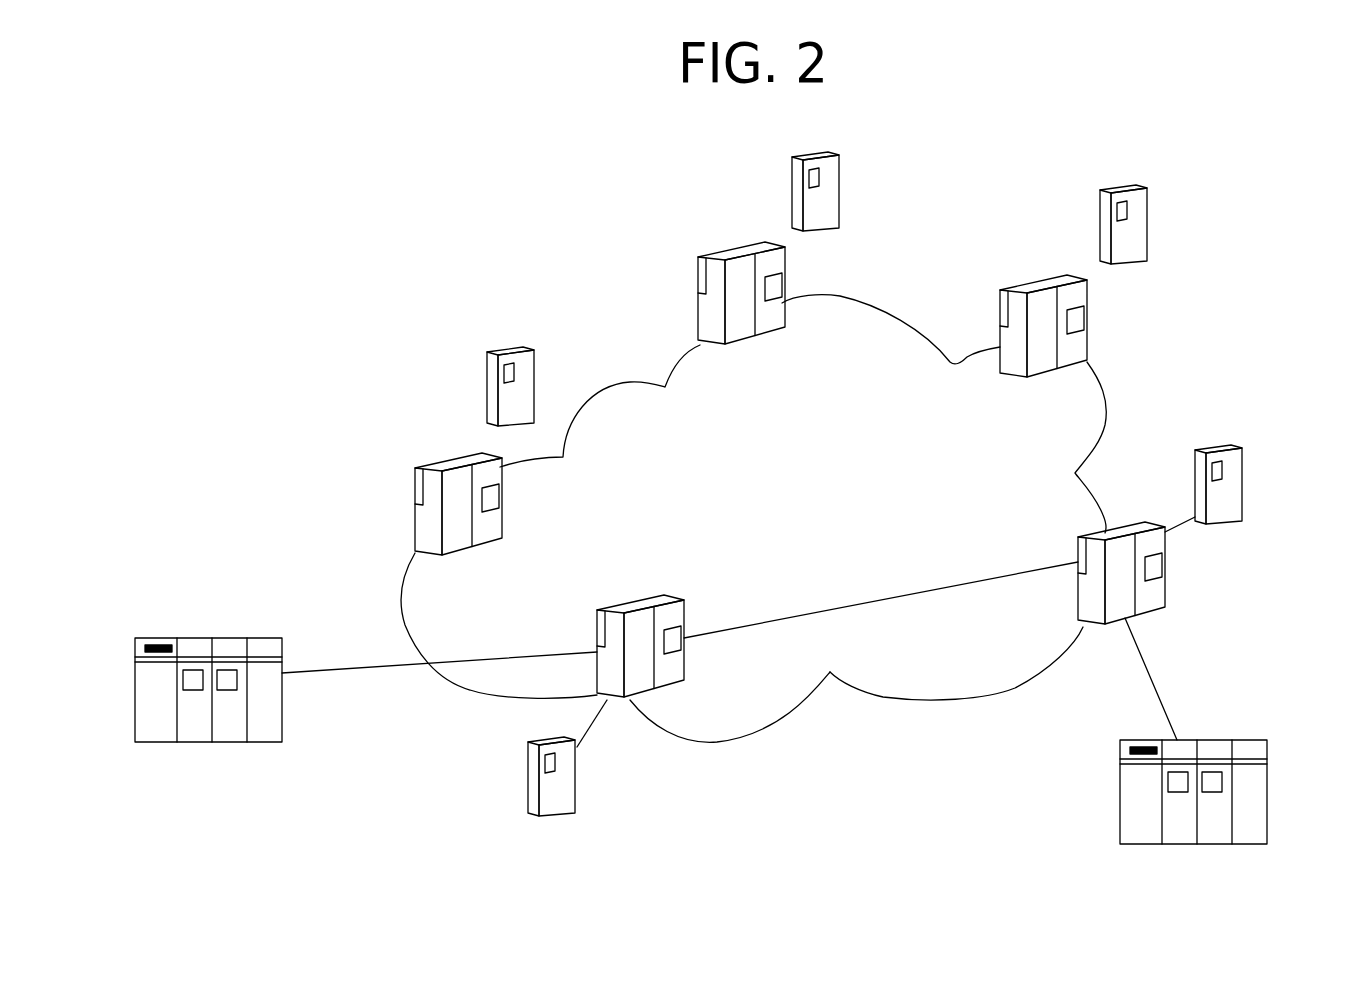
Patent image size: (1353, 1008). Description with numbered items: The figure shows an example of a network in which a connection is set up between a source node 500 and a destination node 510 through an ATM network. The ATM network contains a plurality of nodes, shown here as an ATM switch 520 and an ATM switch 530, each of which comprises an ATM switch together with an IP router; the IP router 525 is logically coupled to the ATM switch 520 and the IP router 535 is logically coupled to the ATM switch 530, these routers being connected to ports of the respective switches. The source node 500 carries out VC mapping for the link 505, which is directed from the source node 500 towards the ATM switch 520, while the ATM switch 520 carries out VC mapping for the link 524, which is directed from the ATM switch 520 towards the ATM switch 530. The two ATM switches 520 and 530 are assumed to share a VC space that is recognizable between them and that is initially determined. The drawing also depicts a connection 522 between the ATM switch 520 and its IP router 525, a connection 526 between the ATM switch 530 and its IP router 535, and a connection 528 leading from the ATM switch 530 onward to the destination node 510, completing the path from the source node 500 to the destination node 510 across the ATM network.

The source node 500 is at (228, 743).
The link 505 is at (360, 667).
The destination node 510 is at (1190, 844).
The ATM switch 520 is at (677, 598).
The link to mobile device 522 is at (597, 727).
The link 524 is at (933, 594).
The IP router 525 is at (558, 817).
The link to mobile device 526 is at (1178, 521).
The link to second server 528 is at (1167, 690).
The ATM switch 530 is at (1165, 585).
The IP router 535 is at (1242, 470).